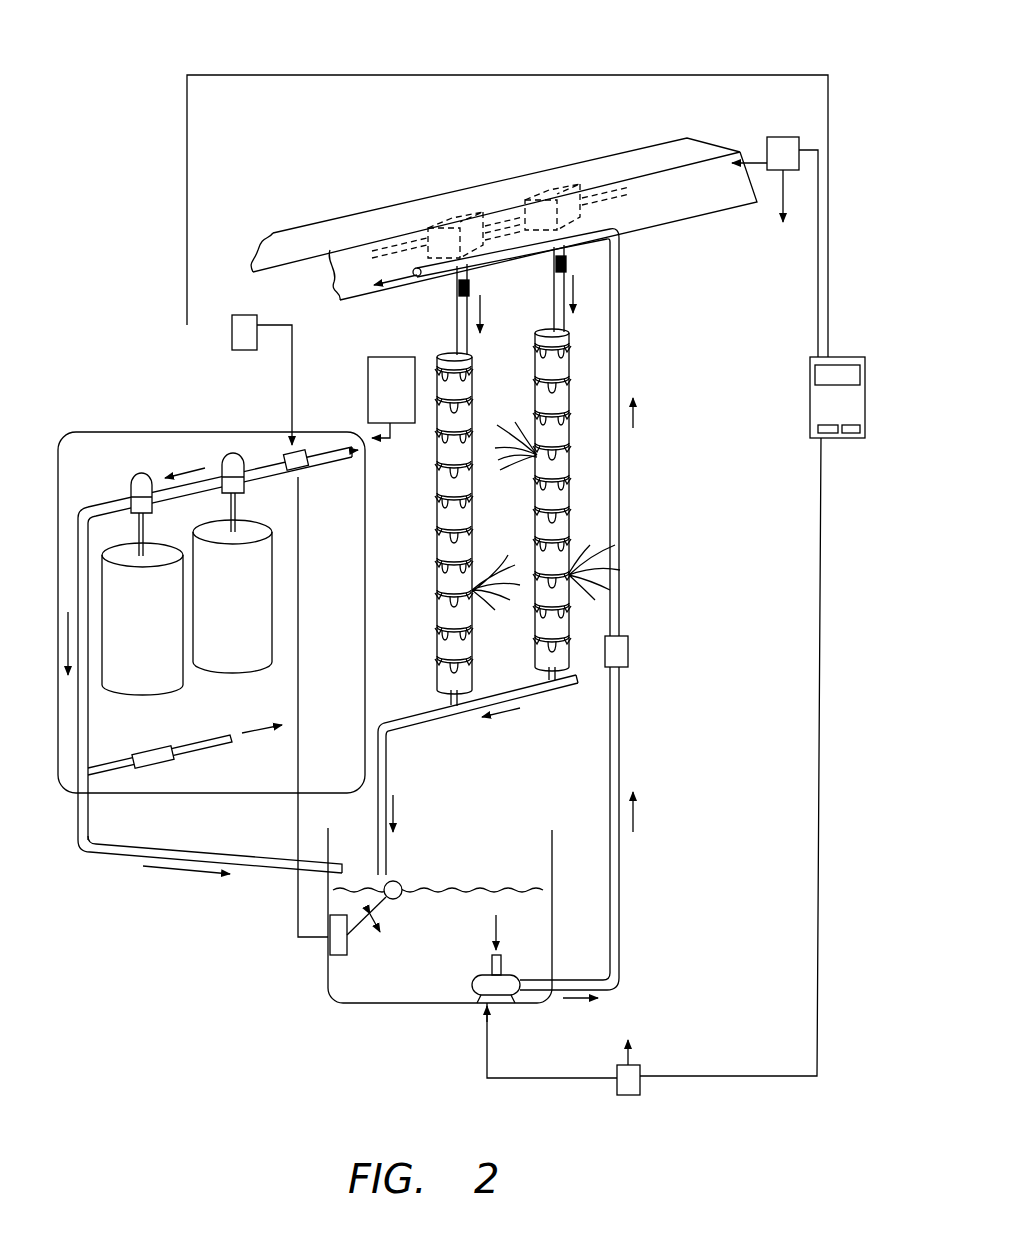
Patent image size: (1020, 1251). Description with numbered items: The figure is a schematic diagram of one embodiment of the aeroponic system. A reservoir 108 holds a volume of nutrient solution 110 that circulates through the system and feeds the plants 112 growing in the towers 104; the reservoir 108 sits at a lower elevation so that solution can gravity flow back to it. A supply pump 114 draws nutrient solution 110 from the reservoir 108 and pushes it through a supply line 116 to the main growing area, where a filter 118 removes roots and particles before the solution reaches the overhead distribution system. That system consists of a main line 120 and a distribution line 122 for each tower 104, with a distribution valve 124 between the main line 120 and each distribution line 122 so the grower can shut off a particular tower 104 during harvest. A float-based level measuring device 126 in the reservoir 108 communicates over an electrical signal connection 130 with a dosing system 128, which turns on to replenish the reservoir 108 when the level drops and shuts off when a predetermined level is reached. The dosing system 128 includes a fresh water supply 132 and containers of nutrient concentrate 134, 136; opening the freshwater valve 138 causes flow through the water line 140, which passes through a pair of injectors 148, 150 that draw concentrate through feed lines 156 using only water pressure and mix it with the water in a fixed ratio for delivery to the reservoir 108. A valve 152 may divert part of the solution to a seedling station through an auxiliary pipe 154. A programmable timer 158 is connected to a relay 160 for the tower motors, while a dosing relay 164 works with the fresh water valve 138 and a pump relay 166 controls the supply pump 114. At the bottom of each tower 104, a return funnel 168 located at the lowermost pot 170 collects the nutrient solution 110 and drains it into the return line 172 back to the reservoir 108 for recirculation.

The growing tower 104 is at (526, 464).
The reservoir 108 is at (425, 1005).
The nutrient solution 110 is at (385, 980).
The plants 112 is at (463, 672).
The supply pump 114 is at (512, 990).
The supply line 116 is at (620, 905).
The filter 118 is at (629, 652).
The main line 120 is at (621, 318).
The distribution line 122 is at (455, 322).
The distribution valve 124 is at (455, 276).
The level measuring device 126 is at (330, 942).
The dosing system 128 is at (60, 795).
The electrical signal connection 130 is at (300, 595).
The fresh water supply 132 is at (390, 370).
The nutrient concentrate container 134 is at (138, 680).
The nutrient concentrate container 136 is at (233, 650).
The freshwater valve 138 is at (290, 453).
The water line 140 is at (345, 450).
The injector 148 is at (232, 455).
The injector 150 is at (140, 475).
The valve 152 is at (160, 766).
The auxiliary pipe 154 is at (205, 747).
The feed line 156 is at (243, 505).
The programmable timer 158 is at (830, 402).
The relay 160 is at (785, 137).
The dosing relay 164 is at (232, 342).
The pump relay 166 is at (640, 1092).
The return funnel 168 is at (543, 690).
The lowermost pot 170 is at (537, 638).
The return line 172 is at (386, 775).